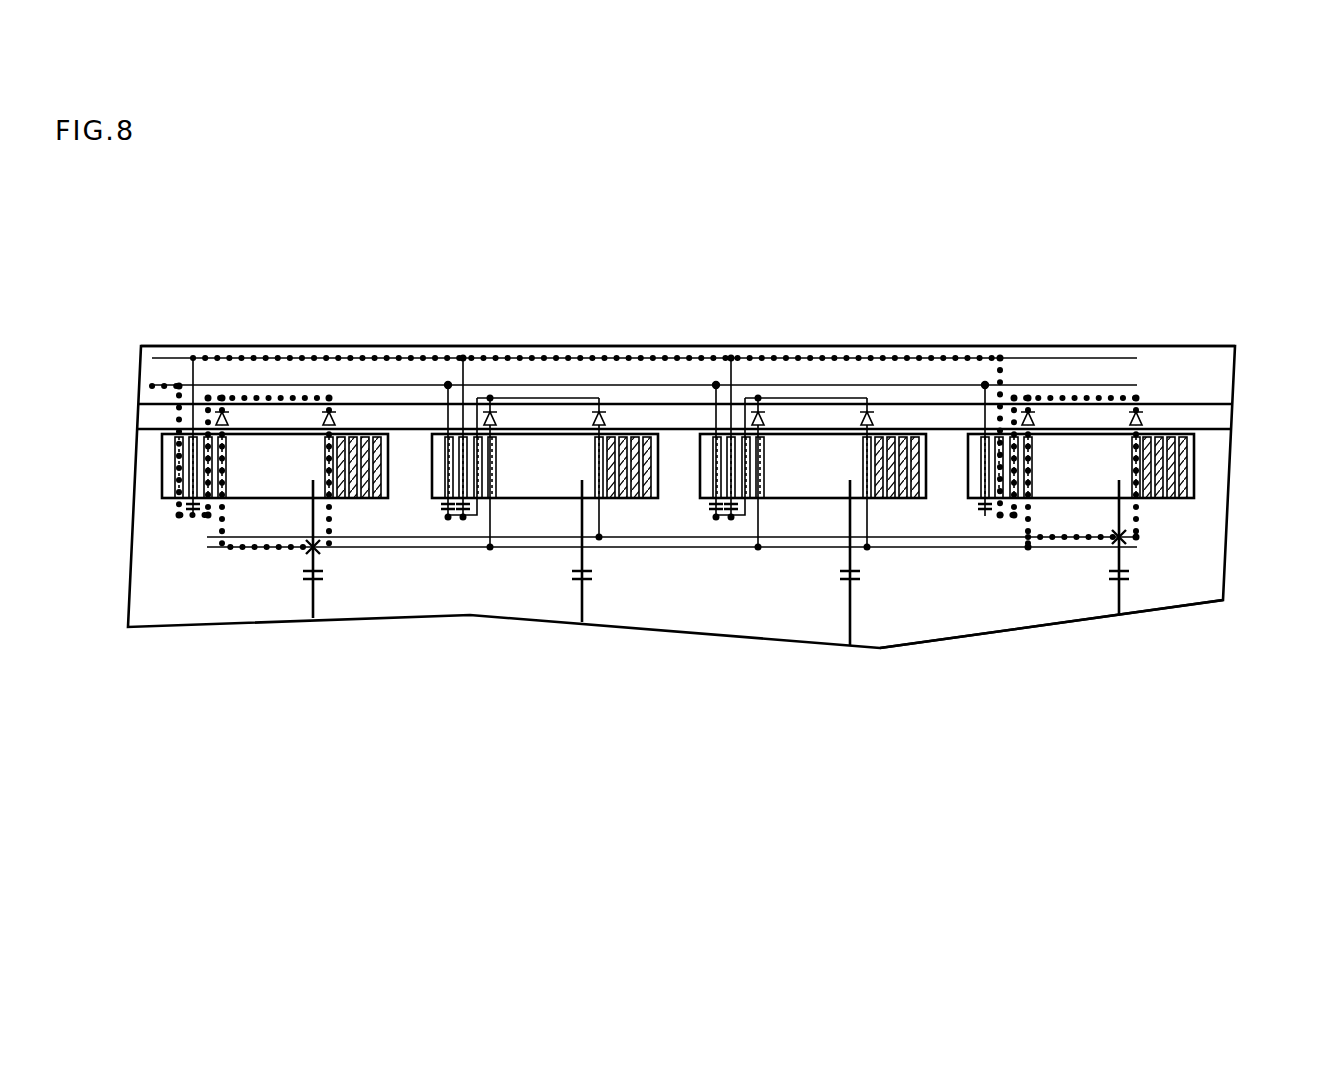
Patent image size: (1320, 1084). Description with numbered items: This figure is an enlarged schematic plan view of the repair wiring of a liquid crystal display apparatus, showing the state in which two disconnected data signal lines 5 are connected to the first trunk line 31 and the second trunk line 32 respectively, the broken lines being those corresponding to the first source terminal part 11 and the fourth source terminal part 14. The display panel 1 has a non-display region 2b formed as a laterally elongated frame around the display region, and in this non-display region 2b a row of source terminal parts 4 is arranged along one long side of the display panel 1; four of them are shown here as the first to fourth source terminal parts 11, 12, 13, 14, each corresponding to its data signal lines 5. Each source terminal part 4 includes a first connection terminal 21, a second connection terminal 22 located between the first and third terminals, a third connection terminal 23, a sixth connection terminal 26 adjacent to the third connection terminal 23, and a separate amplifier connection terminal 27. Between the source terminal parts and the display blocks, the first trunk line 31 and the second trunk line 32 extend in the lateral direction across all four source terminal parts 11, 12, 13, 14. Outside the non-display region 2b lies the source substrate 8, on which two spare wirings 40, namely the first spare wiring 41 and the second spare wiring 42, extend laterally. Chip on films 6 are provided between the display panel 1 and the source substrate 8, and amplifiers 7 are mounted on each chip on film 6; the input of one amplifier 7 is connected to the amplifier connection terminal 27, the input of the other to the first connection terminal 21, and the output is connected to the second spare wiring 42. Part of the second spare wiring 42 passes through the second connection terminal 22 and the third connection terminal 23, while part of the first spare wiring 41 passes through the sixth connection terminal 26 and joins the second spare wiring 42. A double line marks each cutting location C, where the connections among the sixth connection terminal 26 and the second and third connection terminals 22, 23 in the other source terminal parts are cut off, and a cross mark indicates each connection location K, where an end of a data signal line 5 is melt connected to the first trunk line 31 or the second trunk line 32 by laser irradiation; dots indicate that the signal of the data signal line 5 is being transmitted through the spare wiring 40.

The display panel 1 is at (1197, 582).
The non-display region 2b is at (1212, 608).
The source terminal part 4 is at (1197, 505).
The data signal line 5 is at (312, 603).
The chip on film 6 is at (1215, 420).
The amplifier 7 is at (221, 400).
The source substrate 8 is at (1225, 372).
The first source terminal part 11 is at (290, 445).
The second source terminal part 12 is at (560, 445).
The third source terminal part 13 is at (828, 445).
The fourth source terminal part 14 is at (1096, 445).
The first connection terminal 21 is at (236, 440).
The second connection terminal 22 is at (207, 398).
The third connection terminal 23 is at (195, 520).
The sixth connection terminal 26 is at (175, 488).
The amplifier connection terminal 27 is at (338, 500).
The first trunk line 31 is at (1135, 545).
The second trunk line 32 is at (1138, 532).
The spare wiring 40 is at (668, 355).
The first spare wiring 41 is at (378, 387).
The second spare wiring 42 is at (178, 357).
The cutting location C is at (193, 522).
The connection location K is at (305, 548).